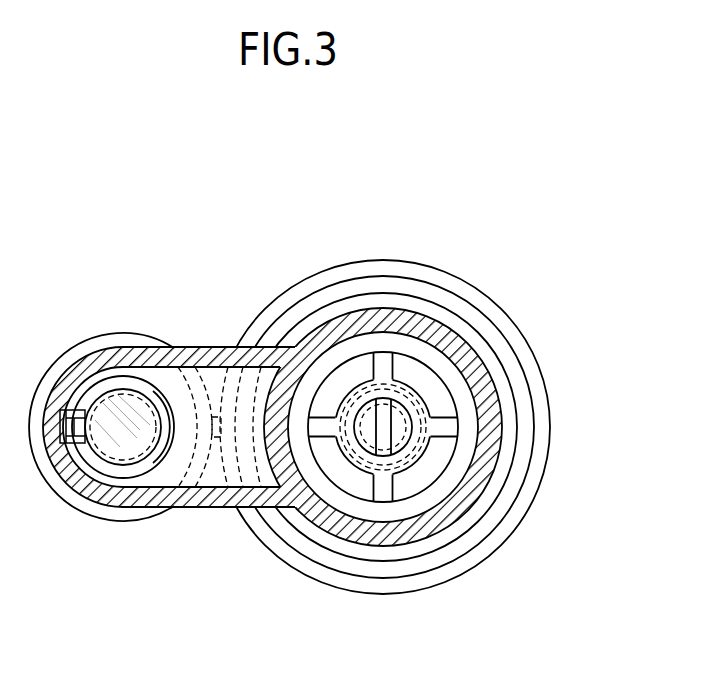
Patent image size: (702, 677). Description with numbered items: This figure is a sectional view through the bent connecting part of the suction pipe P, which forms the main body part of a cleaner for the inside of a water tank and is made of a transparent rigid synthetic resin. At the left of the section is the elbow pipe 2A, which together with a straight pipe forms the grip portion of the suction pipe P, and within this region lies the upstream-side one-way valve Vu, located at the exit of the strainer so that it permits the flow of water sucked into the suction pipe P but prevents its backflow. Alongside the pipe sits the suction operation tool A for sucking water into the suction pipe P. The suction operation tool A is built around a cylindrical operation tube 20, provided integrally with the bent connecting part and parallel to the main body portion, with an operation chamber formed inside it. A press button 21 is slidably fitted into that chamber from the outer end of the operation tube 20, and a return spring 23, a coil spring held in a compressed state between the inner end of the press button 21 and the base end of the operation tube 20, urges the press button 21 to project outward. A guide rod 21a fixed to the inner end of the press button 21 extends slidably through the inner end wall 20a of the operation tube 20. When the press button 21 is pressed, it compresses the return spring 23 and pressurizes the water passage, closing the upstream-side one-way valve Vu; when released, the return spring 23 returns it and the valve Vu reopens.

The suction operation tool A is at (435, 313).
The suction pipe P is at (180, 347).
The elbow pipe 2A is at (197, 347).
The operation tube 20 is at (465, 500).
The inner end wall 20a is at (416, 397).
The press button 21 is at (440, 454).
The guide rod 21a is at (368, 437).
The return spring 23 is at (353, 453).
The upstream-side one-way valve Vu is at (112, 473).